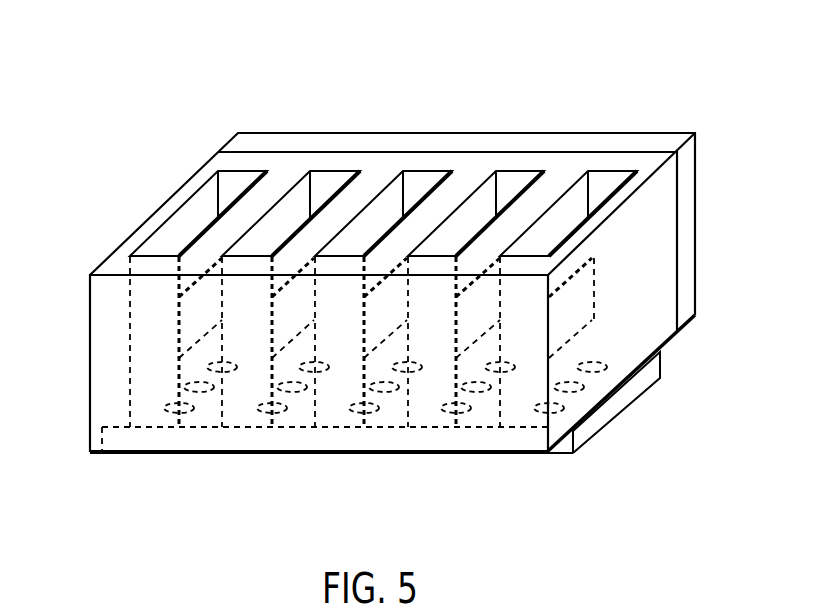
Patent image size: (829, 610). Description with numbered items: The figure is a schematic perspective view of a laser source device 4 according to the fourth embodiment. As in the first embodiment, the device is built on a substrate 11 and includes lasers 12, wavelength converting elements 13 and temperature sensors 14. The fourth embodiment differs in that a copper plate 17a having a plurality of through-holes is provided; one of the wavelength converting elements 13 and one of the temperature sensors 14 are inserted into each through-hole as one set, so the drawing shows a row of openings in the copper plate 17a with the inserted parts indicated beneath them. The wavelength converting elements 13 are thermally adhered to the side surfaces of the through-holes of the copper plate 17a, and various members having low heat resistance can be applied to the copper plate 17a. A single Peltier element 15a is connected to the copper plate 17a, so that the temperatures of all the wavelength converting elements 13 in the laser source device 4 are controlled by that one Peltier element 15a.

The laser source device 4 is at (407, 96).
The substrate 11 is at (586, 430).
The lasers 12 is at (160, 403).
The wavelength converting elements 13 is at (150, 247).
The temperature sensors 14 is at (208, 320).
The Peltier element 15a is at (250, 141).
The copper plate 17a is at (188, 185).